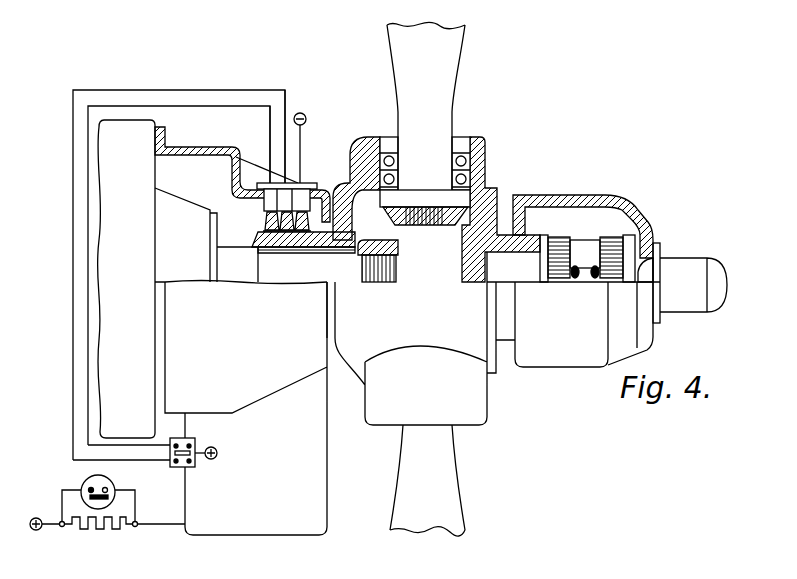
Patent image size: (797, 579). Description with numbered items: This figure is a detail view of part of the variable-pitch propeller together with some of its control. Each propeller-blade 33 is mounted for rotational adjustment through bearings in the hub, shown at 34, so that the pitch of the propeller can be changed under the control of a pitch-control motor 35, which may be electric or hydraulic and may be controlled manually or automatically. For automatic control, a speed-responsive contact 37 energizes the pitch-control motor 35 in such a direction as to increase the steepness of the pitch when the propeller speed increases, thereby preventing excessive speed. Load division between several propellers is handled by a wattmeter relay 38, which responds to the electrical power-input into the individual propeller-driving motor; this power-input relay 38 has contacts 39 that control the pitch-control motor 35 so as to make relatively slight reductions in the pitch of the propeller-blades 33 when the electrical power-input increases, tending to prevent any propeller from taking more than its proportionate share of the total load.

The propeller-blade 33 is at (404, 62).
The bearings in the hub 34 is at (396, 138).
The pitch-control motor 35 is at (690, 264).
The speed-responsive contact 37 is at (189, 449).
The wattmeter relay 38 is at (82, 486).
The contacts 39 is at (106, 488).